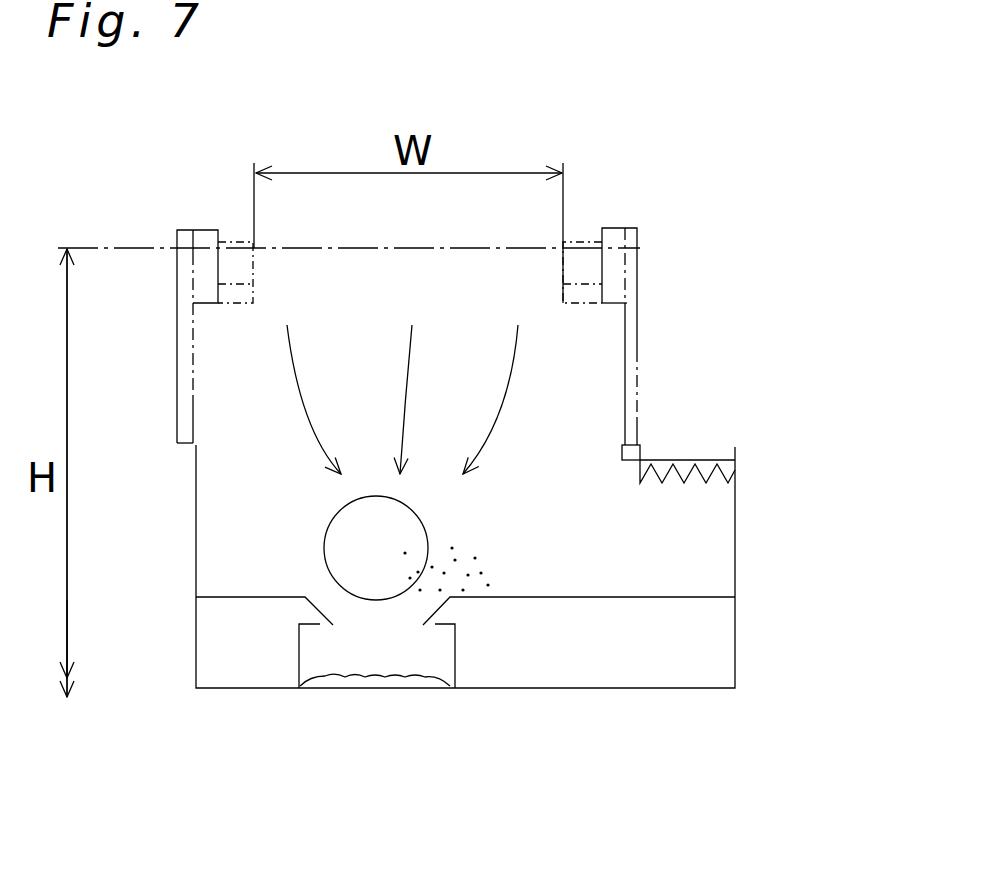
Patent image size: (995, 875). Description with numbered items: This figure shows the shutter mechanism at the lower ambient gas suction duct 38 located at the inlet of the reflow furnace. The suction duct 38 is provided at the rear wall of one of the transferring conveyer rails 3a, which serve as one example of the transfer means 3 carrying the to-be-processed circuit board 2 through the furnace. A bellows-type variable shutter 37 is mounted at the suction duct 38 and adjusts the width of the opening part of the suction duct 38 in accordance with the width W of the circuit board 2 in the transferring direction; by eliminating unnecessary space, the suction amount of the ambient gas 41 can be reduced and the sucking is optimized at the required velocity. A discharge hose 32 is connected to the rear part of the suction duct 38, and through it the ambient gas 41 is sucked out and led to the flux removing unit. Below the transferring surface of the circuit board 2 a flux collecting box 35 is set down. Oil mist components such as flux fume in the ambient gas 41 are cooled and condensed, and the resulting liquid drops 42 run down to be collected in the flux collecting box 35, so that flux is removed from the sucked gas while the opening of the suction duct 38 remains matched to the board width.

The circuit board 2 is at (484, 246).
The transfer means 3 is at (604, 217).
The transferring conveyer rail 3a is at (233, 240).
The ambient gas 41 is at (518, 340).
The bellows-type variable shutter 37 is at (715, 458).
The discharge hose 32 is at (428, 540).
The ambient gas suction duct 38 is at (737, 617).
The flux collecting box 35 is at (455, 645).
The liquid drops 42 is at (352, 682).